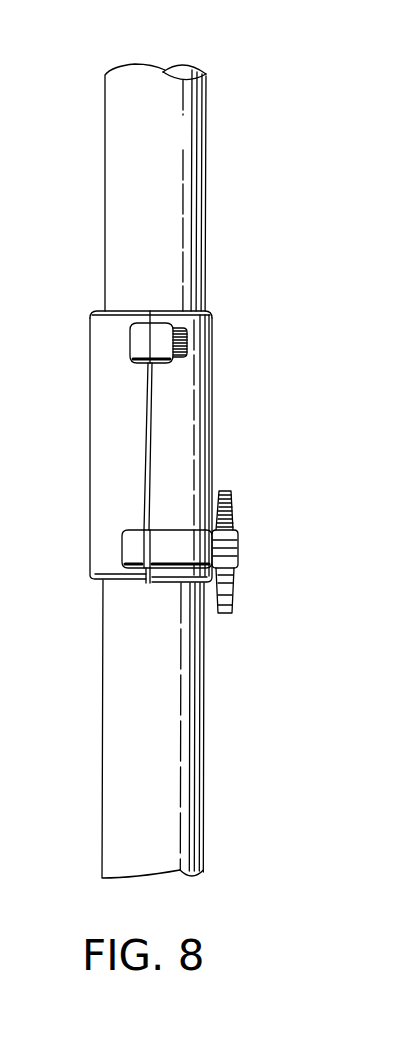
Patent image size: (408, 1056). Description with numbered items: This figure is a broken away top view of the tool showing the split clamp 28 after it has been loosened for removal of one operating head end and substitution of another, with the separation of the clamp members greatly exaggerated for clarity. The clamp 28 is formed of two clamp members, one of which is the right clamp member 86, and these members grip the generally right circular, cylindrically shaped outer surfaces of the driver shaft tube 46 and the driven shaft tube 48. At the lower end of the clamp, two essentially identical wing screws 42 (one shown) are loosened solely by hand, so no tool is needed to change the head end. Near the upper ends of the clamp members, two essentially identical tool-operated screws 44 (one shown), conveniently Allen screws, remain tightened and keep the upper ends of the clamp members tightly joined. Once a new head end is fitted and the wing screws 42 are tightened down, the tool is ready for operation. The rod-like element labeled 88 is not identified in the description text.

The driver shaft tube 46 is at (122, 200).
The driven shaft tube 48 is at (178, 755).
The right clamp member 86 is at (193, 462).
The clamp 28 is at (229, 387).
The screws 44 is at (181, 332).
The rod 88 is at (97, 471).
The wing screws 42 is at (230, 554).